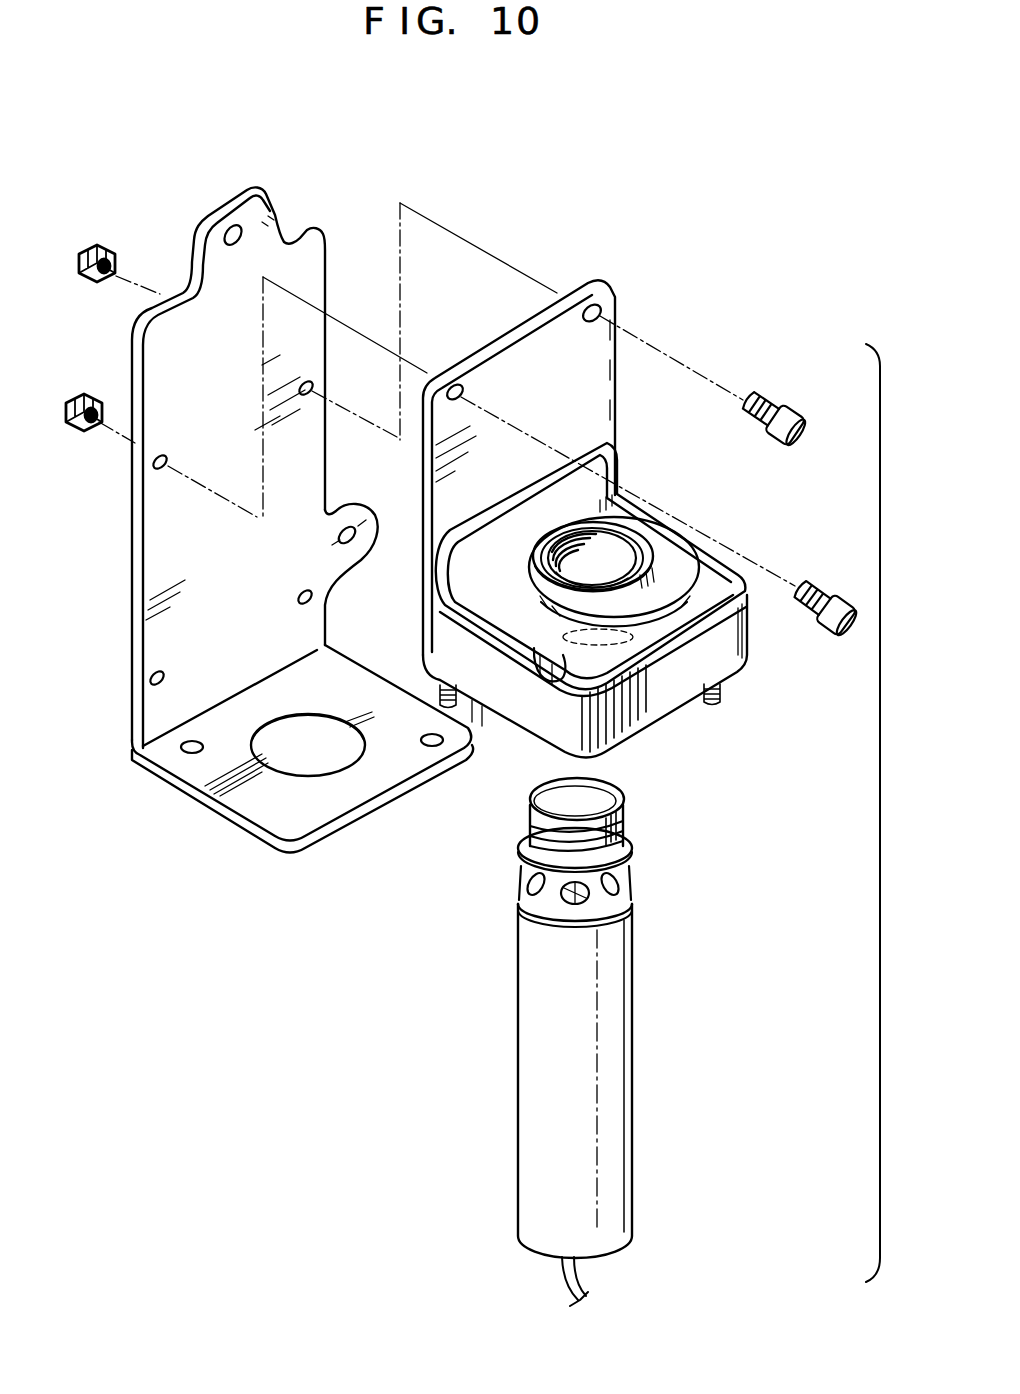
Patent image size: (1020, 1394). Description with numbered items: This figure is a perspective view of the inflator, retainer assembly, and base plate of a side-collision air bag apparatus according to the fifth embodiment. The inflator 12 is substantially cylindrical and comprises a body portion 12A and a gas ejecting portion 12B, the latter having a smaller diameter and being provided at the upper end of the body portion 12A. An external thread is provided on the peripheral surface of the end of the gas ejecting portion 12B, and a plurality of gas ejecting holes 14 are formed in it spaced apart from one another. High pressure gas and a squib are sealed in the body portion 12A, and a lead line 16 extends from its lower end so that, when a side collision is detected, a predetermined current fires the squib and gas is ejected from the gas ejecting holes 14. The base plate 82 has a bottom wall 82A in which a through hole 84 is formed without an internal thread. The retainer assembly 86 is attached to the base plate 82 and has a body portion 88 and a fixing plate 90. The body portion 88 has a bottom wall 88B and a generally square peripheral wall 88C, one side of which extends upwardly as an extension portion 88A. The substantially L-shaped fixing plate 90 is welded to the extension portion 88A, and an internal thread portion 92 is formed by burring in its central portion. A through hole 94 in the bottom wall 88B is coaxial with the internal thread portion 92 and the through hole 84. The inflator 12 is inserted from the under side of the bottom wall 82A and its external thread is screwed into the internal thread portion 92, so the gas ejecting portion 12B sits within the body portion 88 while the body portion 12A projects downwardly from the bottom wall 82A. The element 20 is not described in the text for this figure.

The inflator 12 is at (578, 1042).
The body portion 12A is at (520, 1108).
The gas ejecting portion 12B is at (584, 897).
The gas ejecting holes 14 is at (572, 904).
The lead line 16 is at (573, 1290).
The threaded cap 20 is at (627, 830).
The base plate 82 is at (302, 512).
The bottom wall 82A is at (303, 805).
The through hole 84 is at (280, 750).
The retainer assembly 86 is at (619, 526).
The body portion 88 is at (619, 565).
The extension portion 88A is at (602, 417).
The bottom wall 88B is at (653, 645).
The peripheral wall 88C is at (733, 667).
The fixing plate 90 is at (661, 524).
The internal thread portion 92 is at (637, 545).
The through hole 94 is at (548, 668).